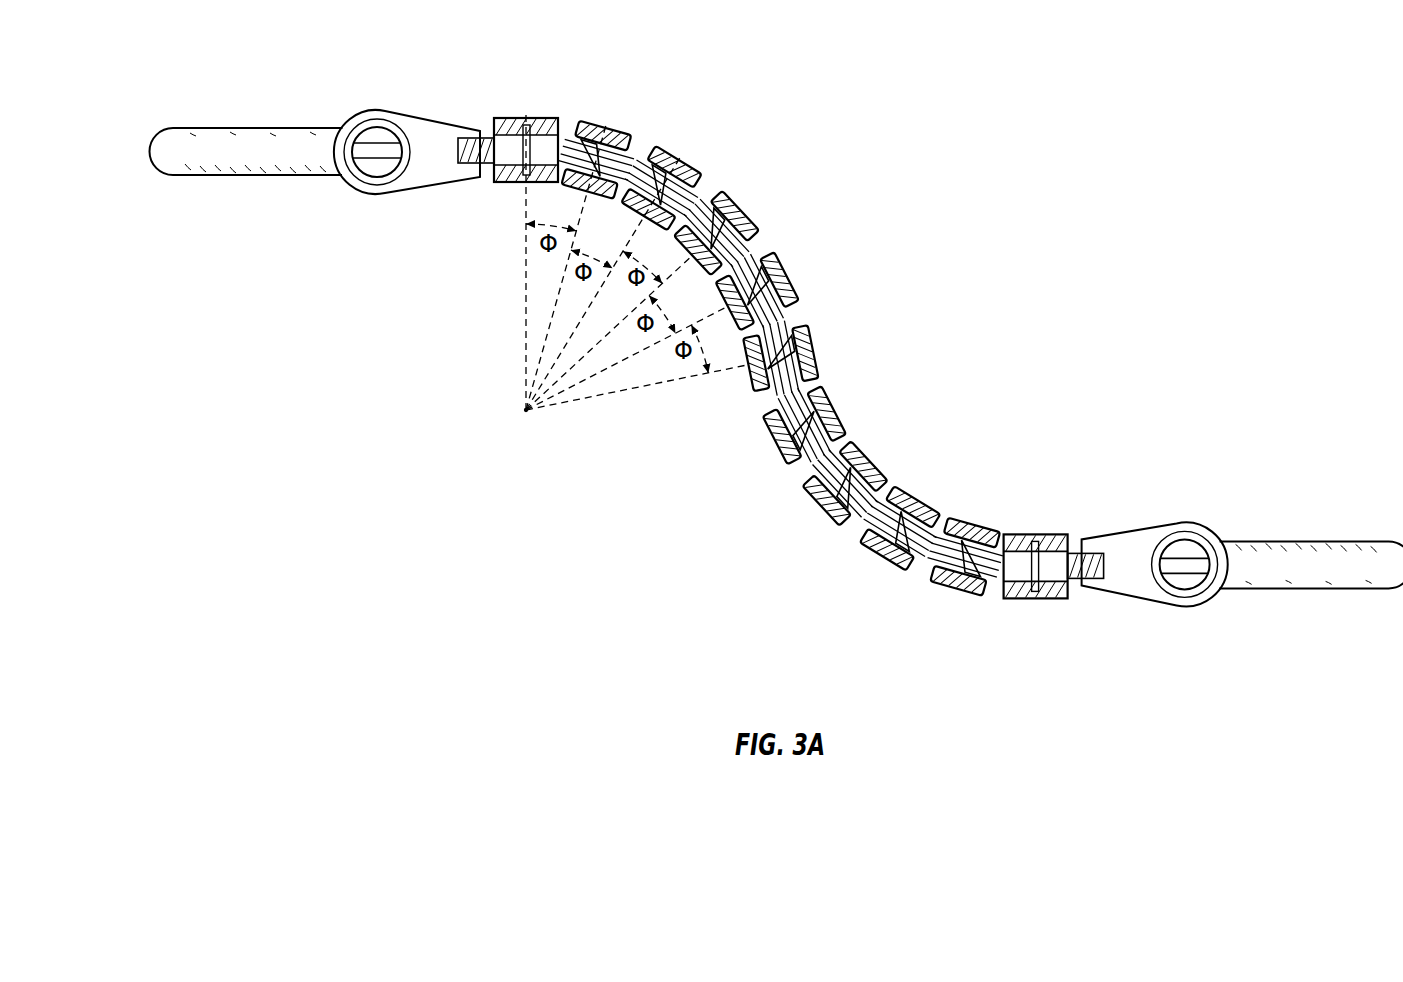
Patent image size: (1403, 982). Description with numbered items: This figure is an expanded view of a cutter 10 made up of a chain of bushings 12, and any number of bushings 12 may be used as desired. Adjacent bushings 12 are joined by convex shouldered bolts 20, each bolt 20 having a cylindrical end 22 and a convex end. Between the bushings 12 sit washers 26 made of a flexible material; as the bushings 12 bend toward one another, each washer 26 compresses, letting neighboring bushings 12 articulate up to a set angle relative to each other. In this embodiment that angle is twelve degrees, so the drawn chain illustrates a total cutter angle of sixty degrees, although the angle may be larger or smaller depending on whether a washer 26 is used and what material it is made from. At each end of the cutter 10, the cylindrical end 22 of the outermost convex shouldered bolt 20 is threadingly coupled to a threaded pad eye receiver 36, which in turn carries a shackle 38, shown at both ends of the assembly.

The cutter 10 is at (779, 362).
The bushing 12 is at (781, 342).
The convex shouldered bolt 20 is at (503, 120).
The cylindrical end 22 is at (458, 143).
The washer 26 is at (758, 246).
The threaded pad eye receiver 36 is at (418, 112).
The shackle 38 is at (281, 128).